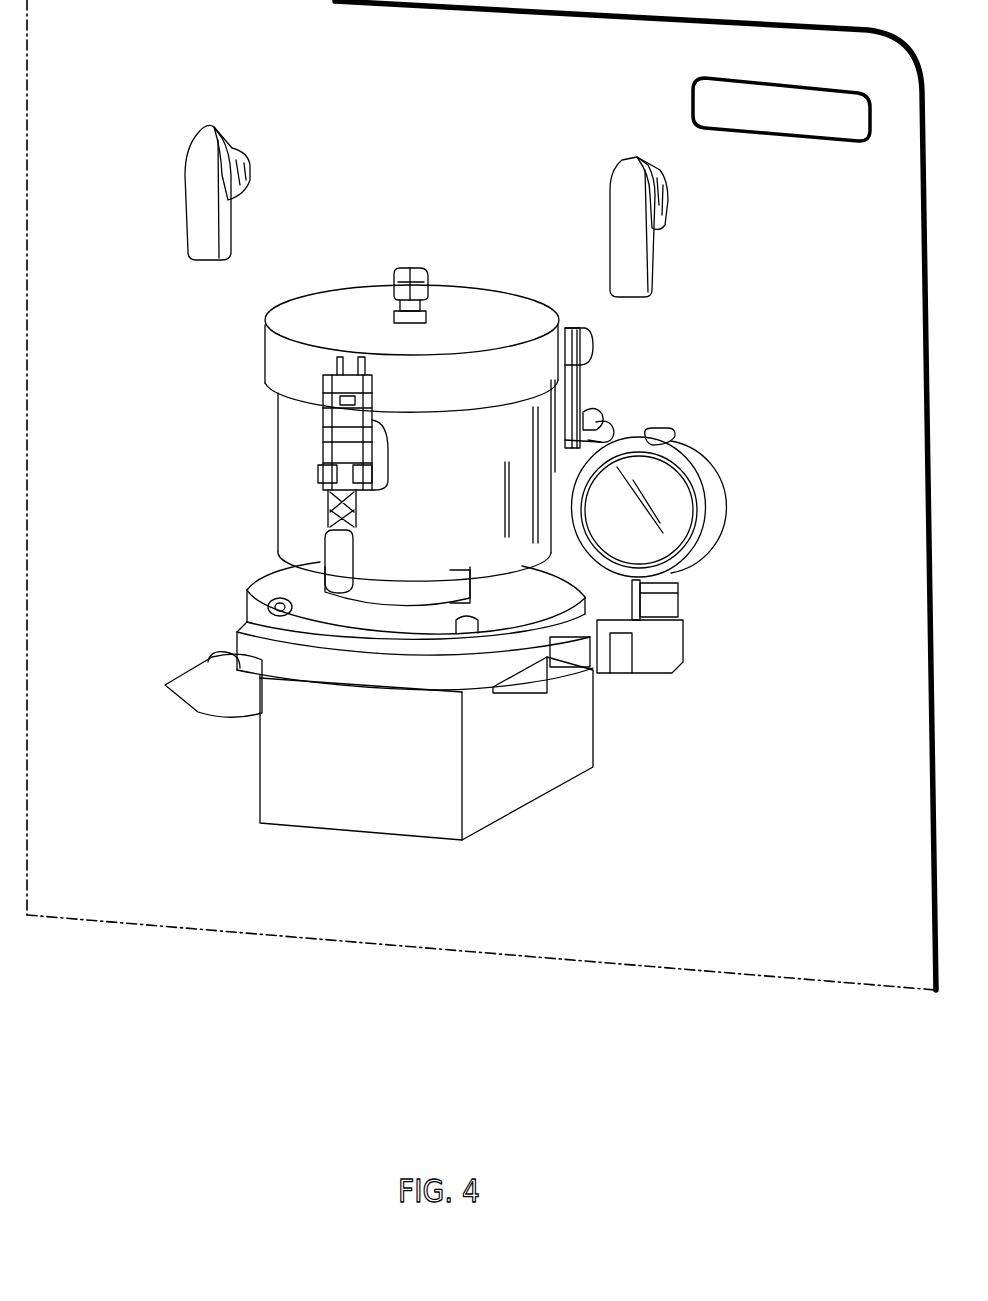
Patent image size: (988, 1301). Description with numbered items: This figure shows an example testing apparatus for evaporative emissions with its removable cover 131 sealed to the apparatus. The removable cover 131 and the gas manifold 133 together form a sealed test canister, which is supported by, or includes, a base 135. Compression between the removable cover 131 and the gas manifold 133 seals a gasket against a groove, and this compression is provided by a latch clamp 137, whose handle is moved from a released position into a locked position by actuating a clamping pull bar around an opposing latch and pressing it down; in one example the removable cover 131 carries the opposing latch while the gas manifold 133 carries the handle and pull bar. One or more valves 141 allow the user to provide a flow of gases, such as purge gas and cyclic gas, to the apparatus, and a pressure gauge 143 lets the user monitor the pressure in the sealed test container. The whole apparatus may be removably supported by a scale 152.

The removable cover 131 is at (463, 306).
The gas manifold 133 is at (278, 491).
The base 135 is at (248, 603).
The latch clamp 137 is at (320, 414).
The valves 141 is at (213, 127).
The pressure gauge 143 is at (703, 465).
The scale 152 is at (350, 820).